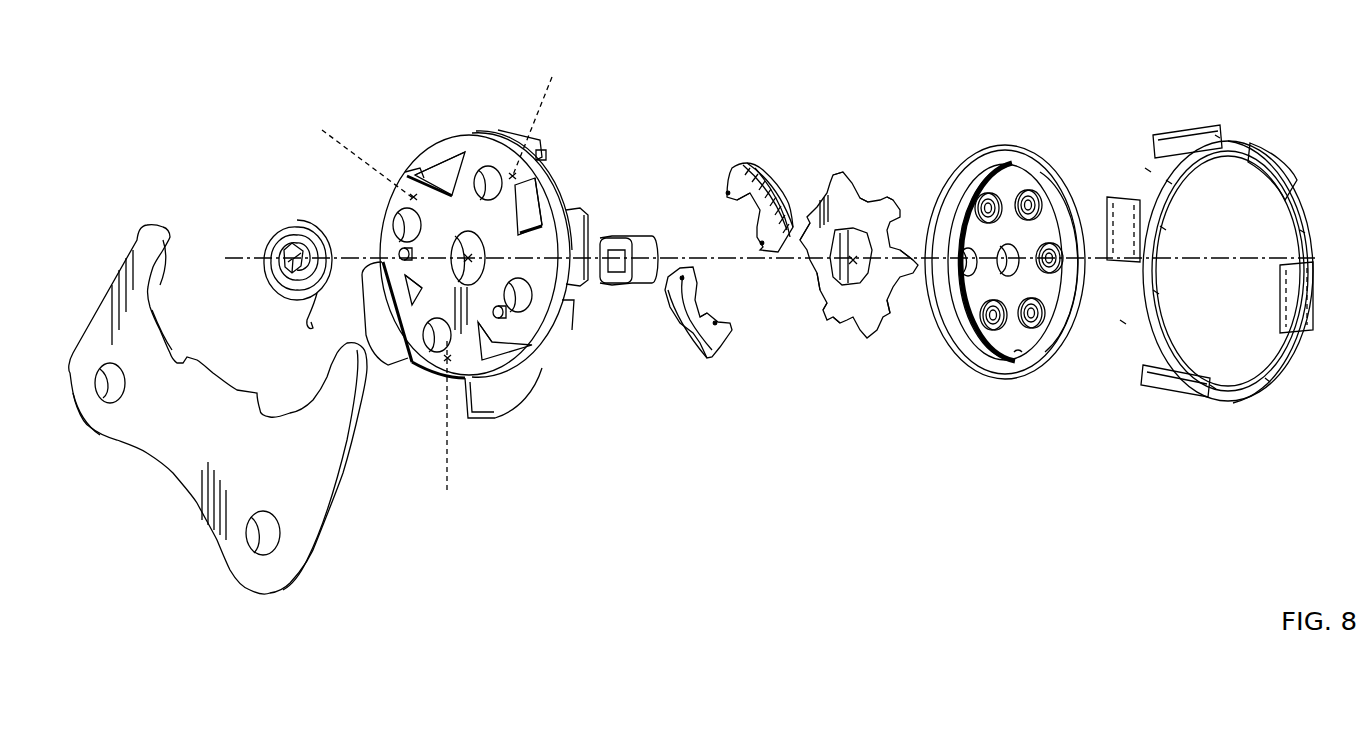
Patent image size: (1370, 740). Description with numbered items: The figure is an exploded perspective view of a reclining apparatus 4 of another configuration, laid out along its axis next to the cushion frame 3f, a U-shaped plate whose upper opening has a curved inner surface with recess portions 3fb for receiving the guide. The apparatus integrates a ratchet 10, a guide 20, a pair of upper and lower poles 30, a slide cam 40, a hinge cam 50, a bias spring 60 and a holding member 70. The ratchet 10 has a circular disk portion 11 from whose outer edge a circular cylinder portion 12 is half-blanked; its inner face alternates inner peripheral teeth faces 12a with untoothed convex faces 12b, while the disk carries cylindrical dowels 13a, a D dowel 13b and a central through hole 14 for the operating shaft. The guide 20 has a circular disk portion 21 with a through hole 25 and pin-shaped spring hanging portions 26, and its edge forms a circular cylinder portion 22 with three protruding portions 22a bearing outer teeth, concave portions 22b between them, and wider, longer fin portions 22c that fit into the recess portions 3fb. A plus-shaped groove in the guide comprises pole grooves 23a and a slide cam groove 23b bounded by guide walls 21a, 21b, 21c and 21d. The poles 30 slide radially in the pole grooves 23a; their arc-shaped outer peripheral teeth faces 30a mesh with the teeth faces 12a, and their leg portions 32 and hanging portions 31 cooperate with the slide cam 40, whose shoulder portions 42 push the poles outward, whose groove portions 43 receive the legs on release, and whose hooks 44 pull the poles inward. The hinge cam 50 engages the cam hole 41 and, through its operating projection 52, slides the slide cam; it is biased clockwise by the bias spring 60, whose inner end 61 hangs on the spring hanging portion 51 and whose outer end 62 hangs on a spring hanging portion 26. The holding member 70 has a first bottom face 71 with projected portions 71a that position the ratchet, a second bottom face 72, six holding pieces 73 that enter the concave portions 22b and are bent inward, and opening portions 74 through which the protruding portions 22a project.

The cushion frame 3f is at (185, 448).
The recess portions 3fb is at (158, 325).
The reclining apparatus 4 is at (912, 95).
The ratchet 10 is at (999, 260).
The circular disk portion 11 is at (968, 182).
The circular cylinder portion 12 is at (989, 240).
The inner peripheral teeth faces 12a is at (940, 228).
The convex faces 12b is at (993, 192).
The dowels 13a is at (1049, 245).
The D dowel 13b is at (966, 272).
The through hole 14 is at (1012, 265).
The guide 20 is at (465, 271).
The circular disk portion 21 is at (447, 163).
The guide wall 21a is at (570, 180).
The guide wall 21b is at (420, 160).
The guide wall 21c is at (494, 338).
The guide wall 21d is at (389, 335).
The circular cylinder portion 22 is at (566, 342).
The protruding portions 22a is at (417, 157).
The concave portions 22b is at (460, 133).
The fin portions 22c is at (378, 352).
The pole grooves 23a is at (526, 277).
The slide cam groove 23b is at (333, 149).
The through hole 25 is at (466, 256).
The spring hanging portions 26 is at (400, 250).
The poles 30 is at (722, 258).
The outer peripheral teeth faces 30a is at (772, 172).
The hanging portions 31 is at (775, 210).
The leg portions 32 is at (728, 195).
The slide cam 40 is at (840, 252).
The cam hole 41 is at (875, 322).
The shoulder portions 42 is at (862, 198).
The groove portions 43 is at (845, 190).
The hooks 44 is at (868, 205).
The hinge cam 50 is at (655, 260).
The spring hanging portion 51 is at (645, 285).
The operating projection 52 is at (614, 286).
The bias spring 60 is at (280, 266).
The inner end 61 is at (284, 248).
The outer end 62 is at (311, 332).
The holding member 70 is at (1216, 256).
The first bottom face 71 is at (1162, 218).
The projected portions 71a is at (1172, 182).
The second bottom face 72 is at (1143, 160).
The holding pieces 73 is at (1165, 140).
The opening portions 74 is at (1216, 134).